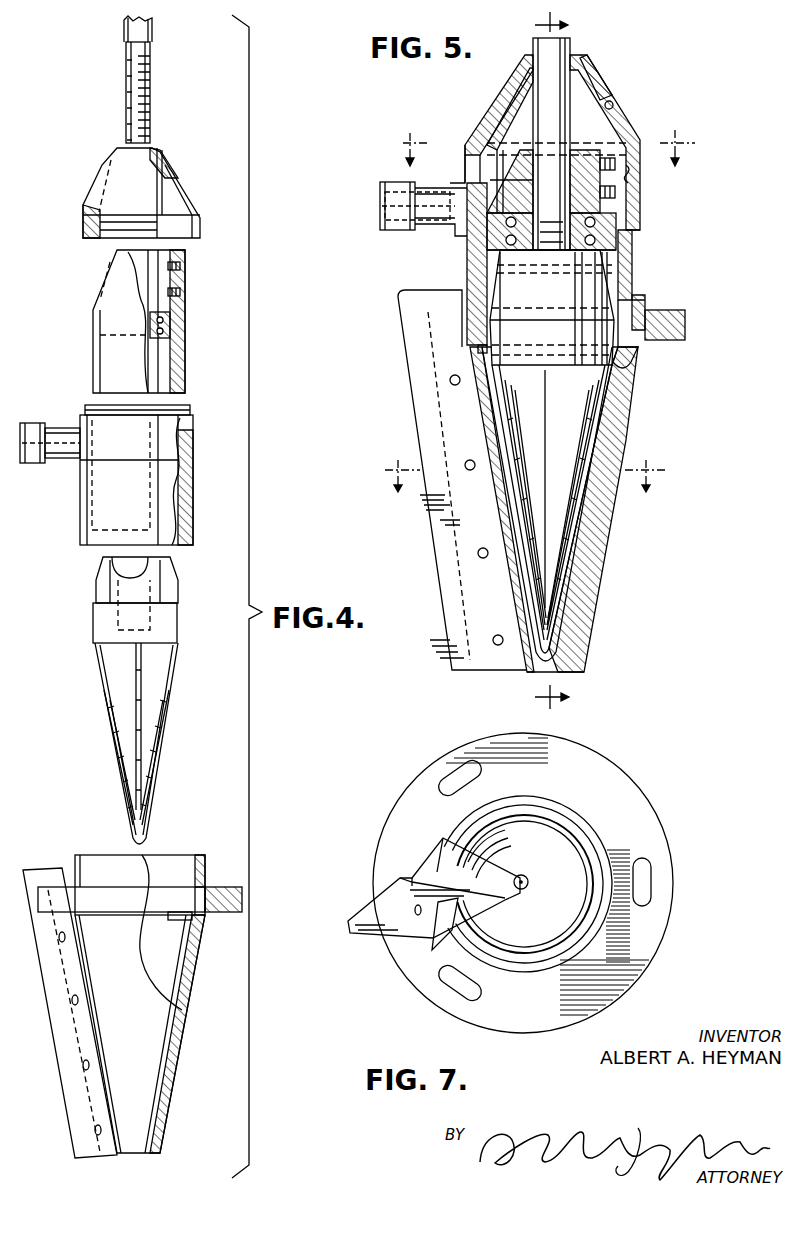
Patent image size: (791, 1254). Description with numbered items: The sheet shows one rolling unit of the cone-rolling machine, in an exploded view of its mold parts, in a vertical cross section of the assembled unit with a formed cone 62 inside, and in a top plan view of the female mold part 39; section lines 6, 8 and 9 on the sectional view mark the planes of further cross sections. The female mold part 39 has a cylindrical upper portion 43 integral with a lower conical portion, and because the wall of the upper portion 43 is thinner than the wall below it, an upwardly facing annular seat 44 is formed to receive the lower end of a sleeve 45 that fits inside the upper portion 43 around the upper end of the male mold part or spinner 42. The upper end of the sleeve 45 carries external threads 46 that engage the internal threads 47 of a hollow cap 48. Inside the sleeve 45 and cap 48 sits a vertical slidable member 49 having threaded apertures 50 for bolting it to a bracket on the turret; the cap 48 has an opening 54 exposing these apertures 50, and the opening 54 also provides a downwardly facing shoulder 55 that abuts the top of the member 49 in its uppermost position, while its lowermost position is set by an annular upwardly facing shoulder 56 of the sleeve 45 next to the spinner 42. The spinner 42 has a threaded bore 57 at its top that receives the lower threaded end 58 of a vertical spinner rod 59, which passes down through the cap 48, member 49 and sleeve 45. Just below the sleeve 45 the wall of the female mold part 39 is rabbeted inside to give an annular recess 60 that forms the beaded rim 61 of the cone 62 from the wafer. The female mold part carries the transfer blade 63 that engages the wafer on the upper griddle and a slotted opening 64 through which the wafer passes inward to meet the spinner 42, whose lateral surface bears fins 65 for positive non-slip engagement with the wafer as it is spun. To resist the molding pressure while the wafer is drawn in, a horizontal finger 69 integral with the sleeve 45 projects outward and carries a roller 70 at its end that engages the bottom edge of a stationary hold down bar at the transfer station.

In FIG. 5, the section line 6- 6 is at (561, 360).
In FIG. 5, the section line 8- 8 is at (549, 157).
In FIG. 5, the section line 9- 9 is at (526, 484).
In FIG. 4, the female mold part 39 is at (158, 1003).
In FIG. 5, the female mold part 39 is at (584, 604).
In FIG. 7, the female mold part 39 is at (630, 790).
In FIG. 4, the male mold part or spinner 42 is at (142, 694).
In FIG. 5, the male mold part or spinner 42 is at (558, 451).
In FIG. 4, the cylindrical upper portion 43 is at (205, 870).
In FIG. 5, the cylindrical upper portion 43 is at (641, 282).
In FIG. 7, the cylindrical upper portion 43 is at (597, 834).
In FIG. 4, the annular seat 44 is at (196, 905).
In FIG. 5, the annular seat 44 is at (624, 350).
In FIG. 7, the annular seat 44 is at (592, 851).
In FIG. 4, the sleeve 45 is at (151, 471).
In FIG. 5, the sleeve 45 is at (634, 246).
In FIG. 4, the external threads 46 is at (190, 408).
In FIG. 5, the external threads 46 is at (631, 172).
In FIG. 4, the internal threads 47 is at (97, 240).
In FIG. 5, the internal threads 47 is at (468, 161).
In FIG. 4, the hollow cap 48 is at (166, 170).
In FIG. 5, the hollow cap 48 is at (597, 80).
In FIG. 4, the vertical slidable member 49 is at (100, 298).
In FIG. 5, the vertical slidable member 49 is at (490, 232).
In FIG. 4, the threaded apertures 50 is at (181, 266).
In FIG. 5, the threaded apertures 50 is at (616, 146).
In FIG. 4, the opening 54 is at (145, 200).
In FIG. 5, the opening 54 is at (565, 138).
In FIG. 4, the downwardly facing shoulder 55 is at (166, 186).
In FIG. 5, the downwardly facing shoulder 55 is at (611, 101).
In FIG. 4, the annular upwardly facing shoulder 56 is at (177, 528).
In FIG. 5, the annular upwardly facing shoulder 56 is at (643, 300).
In FIG. 4, the threaded bore 57 is at (150, 558).
In FIG. 4, the lower threaded end 58 is at (142, 111).
In FIG. 4, the vertical spinner rod 59 is at (126, 33).
In FIG. 5, the vertical spinner rod 59 is at (566, 120).
In FIG. 4, the annular recess 60 is at (170, 918).
In FIG. 5, the annular recess 60 is at (489, 350).
In FIG. 7, the annular recess 60 is at (541, 818).
In FIG. 5, the beaded rim 61 is at (621, 366).
In FIG. 5, the cone 62 is at (580, 538).
In FIG. 4, the transfer blade 63 is at (72, 1095).
In FIG. 5, the transfer blade 63 is at (441, 535).
In FIG. 7, the transfer blade 63 is at (371, 928).
In FIG. 7, the slotted opening 64 is at (428, 946).
In FIG. 4, the fins 65 is at (130, 732).
In FIG. 5, the fins 65 is at (595, 470).
In FIG. 4, the horizontal finger 69 is at (63, 428).
In FIG. 5, the horizontal finger 69 is at (426, 227).
In FIG. 4, the roller 70 is at (33, 464).
In FIG. 5, the roller 70 is at (414, 195).